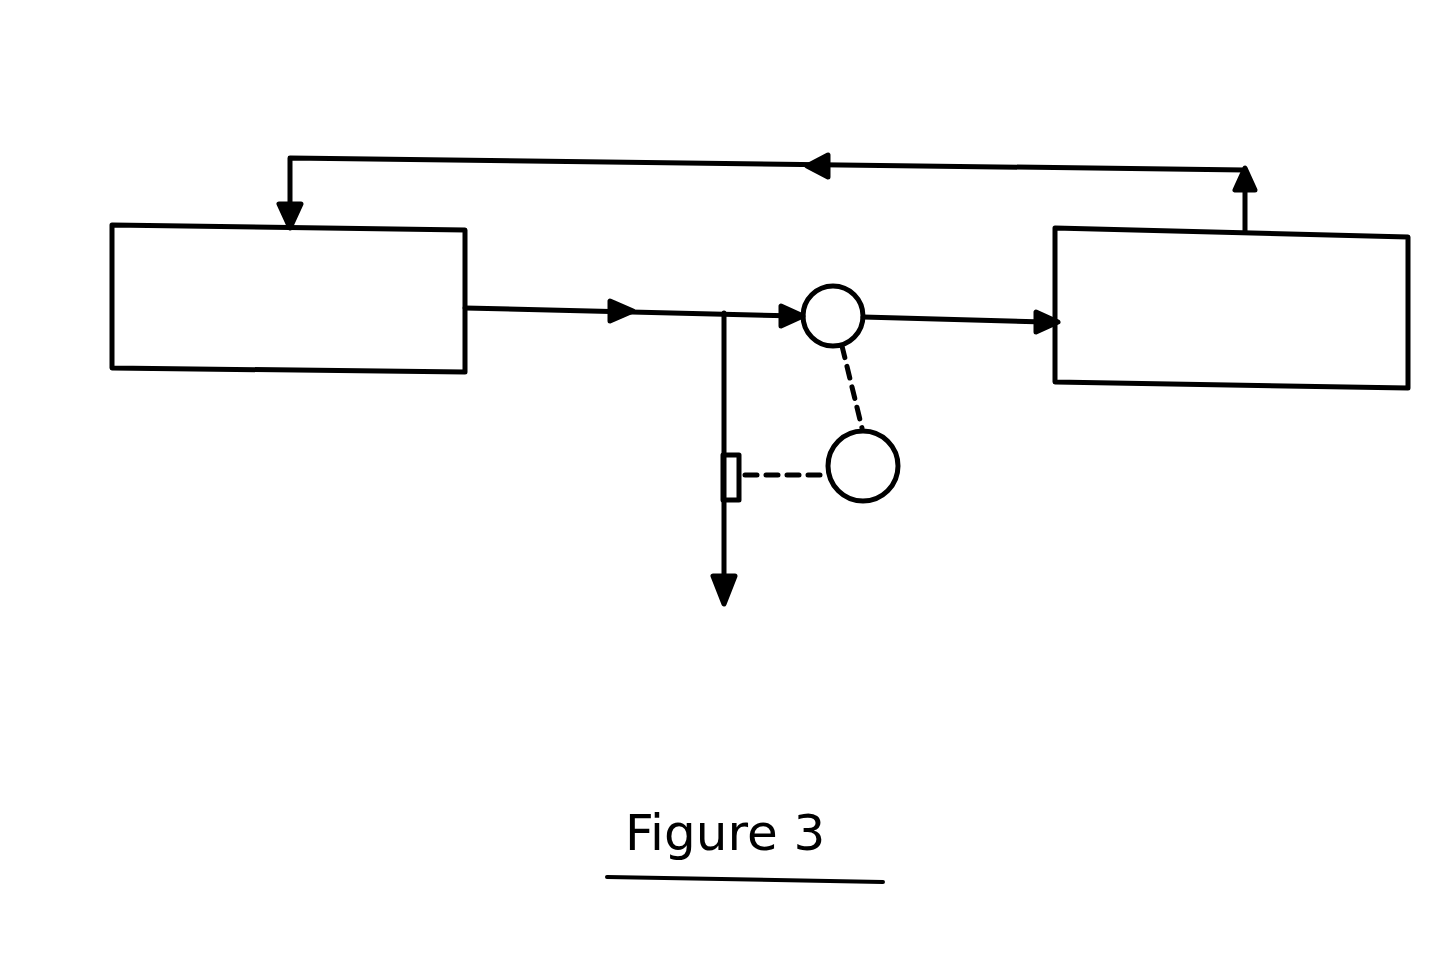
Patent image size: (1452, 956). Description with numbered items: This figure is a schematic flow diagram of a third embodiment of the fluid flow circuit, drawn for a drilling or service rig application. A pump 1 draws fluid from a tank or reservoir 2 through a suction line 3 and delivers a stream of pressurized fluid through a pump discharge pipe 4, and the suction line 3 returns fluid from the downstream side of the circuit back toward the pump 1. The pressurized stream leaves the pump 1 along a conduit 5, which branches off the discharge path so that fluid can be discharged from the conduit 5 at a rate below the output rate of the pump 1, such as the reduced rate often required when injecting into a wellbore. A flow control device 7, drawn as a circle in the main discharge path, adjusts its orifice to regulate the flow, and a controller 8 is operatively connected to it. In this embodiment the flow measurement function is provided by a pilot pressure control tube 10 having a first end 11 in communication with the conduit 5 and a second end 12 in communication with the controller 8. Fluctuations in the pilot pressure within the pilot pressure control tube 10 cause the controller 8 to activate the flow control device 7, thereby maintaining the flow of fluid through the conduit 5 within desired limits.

The pump 1 is at (288, 298).
The tank or reservoir 2 is at (1231, 308).
The suction line 3 is at (660, 165).
The pump discharge pipe 4 is at (532, 312).
The conduit 5 is at (722, 553).
The flow control device 7 is at (852, 278).
The controller 8 is at (898, 466).
The pilot pressure control tube 10 is at (787, 478).
The first end 11 is at (732, 505).
The second end 12 is at (825, 480).